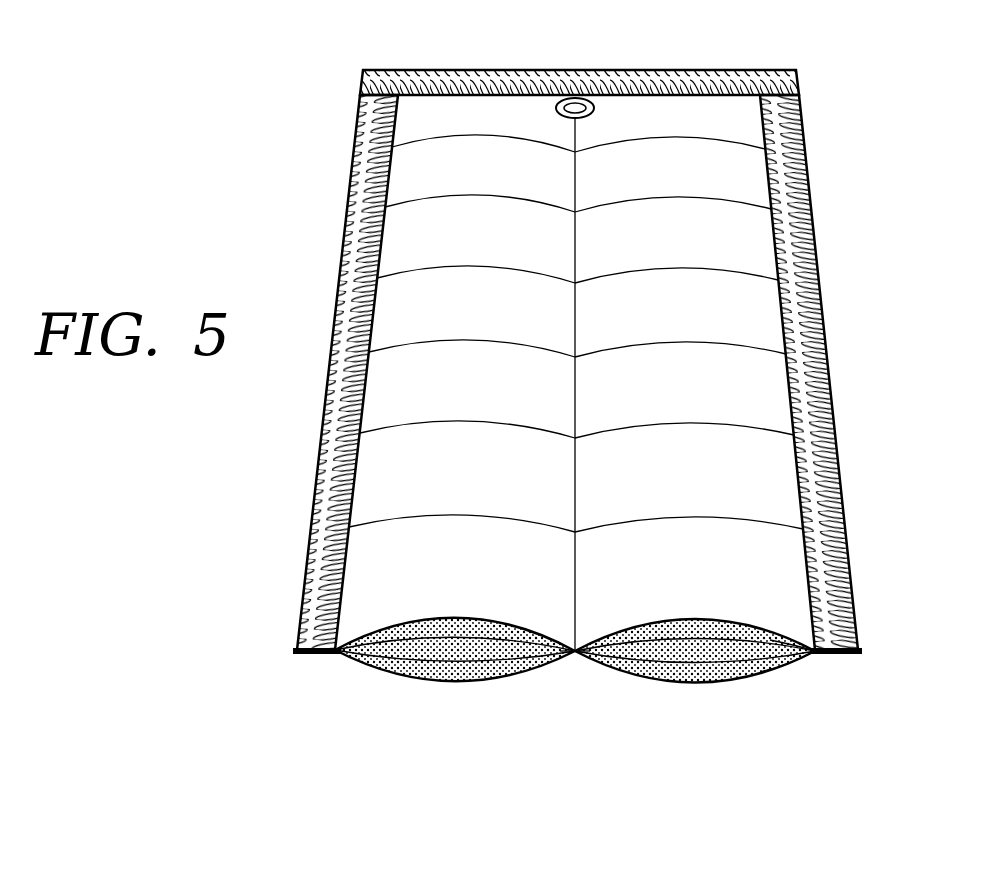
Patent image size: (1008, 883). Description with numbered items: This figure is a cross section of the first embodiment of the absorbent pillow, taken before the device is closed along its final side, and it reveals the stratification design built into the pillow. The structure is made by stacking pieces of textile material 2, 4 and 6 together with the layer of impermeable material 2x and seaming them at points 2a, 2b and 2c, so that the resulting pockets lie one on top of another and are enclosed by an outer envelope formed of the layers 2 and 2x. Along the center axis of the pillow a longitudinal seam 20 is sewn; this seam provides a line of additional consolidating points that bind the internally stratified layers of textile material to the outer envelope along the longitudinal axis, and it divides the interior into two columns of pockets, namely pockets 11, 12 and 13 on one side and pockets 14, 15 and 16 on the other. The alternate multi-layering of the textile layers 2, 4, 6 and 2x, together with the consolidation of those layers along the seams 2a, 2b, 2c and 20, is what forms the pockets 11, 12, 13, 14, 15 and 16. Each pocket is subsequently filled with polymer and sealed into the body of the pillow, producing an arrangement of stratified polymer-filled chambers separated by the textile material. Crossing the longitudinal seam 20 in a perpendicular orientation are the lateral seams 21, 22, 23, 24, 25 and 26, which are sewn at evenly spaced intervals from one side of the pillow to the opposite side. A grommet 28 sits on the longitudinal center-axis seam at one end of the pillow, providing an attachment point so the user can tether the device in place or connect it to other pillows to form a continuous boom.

The envelope 2 is at (800, 623).
The seamed side 2a is at (350, 193).
The seamed side 2b is at (528, 70).
The seamed side 2c is at (802, 200).
The layer of impermeable material 2x is at (607, 663).
The grommet 28 is at (598, 111).
The lateral seam 21 is at (438, 139).
The lateral seam 22 is at (434, 200).
The lateral seam 23 is at (426, 263).
The lateral seam 24 is at (421, 334).
The lateral seam 25 is at (414, 415).
The lateral seam 26 is at (404, 512).
The longitudinal seam 20 is at (573, 652).
The pocket 11 is at (390, 657).
The pocket 12 is at (420, 656).
The pocket 13 is at (467, 680).
The pocket 14 is at (725, 640).
The pocket 15 is at (700, 655).
The pocket 16 is at (648, 677).
The textile material 6 is at (773, 667).
The textile material 4 is at (797, 665).